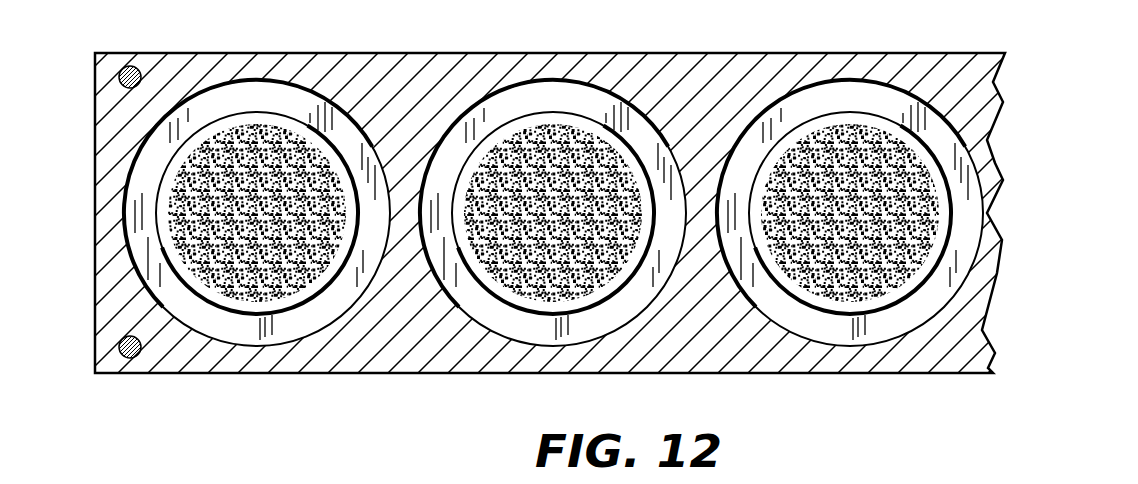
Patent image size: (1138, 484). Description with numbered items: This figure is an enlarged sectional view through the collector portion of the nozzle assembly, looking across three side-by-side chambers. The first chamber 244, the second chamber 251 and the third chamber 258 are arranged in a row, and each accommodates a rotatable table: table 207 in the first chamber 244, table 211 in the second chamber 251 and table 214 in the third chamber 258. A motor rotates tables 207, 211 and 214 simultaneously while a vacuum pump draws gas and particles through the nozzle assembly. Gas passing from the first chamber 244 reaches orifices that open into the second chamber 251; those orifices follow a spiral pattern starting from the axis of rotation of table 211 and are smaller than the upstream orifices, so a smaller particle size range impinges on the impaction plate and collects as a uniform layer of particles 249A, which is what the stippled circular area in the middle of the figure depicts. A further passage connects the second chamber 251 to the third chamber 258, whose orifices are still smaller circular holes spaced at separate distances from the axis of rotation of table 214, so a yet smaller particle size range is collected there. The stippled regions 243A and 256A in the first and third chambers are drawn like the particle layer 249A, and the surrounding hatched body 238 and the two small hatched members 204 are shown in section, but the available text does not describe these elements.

The support block 238 is at (482, 84).
The alignment pin 204 is at (162, 27).
The first chamber 244 is at (278, 112).
The second chamber 251 is at (570, 112).
The third chamber 258 is at (872, 112).
The table 207 is at (327, 143).
The table 211 is at (618, 138).
The table 214 is at (938, 170).
The filler material in first cavity 243A is at (307, 261).
The particles 249A is at (597, 272).
The filler material in third cavity 256A is at (927, 229).